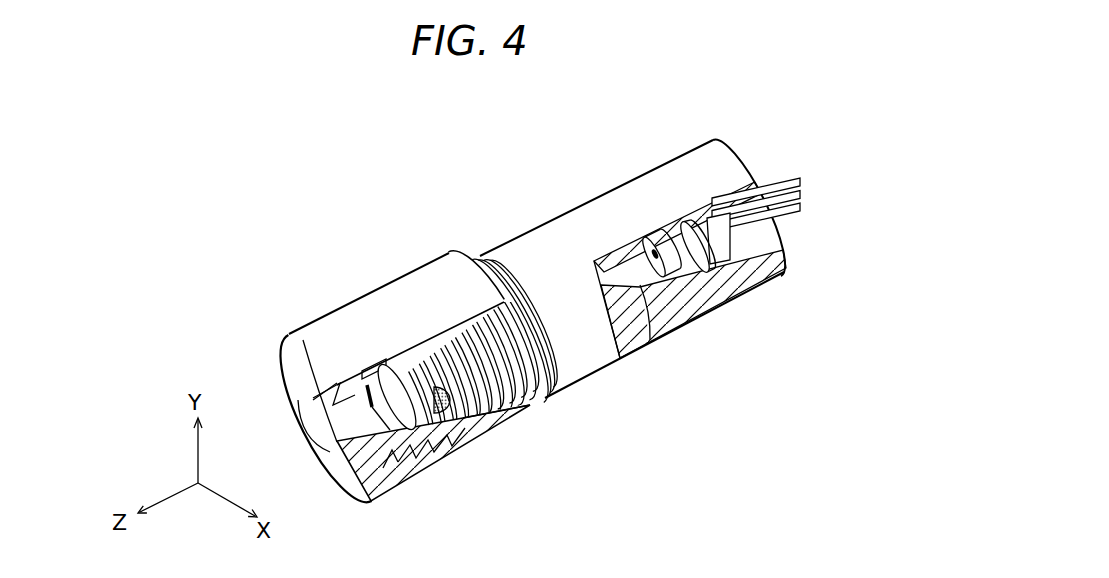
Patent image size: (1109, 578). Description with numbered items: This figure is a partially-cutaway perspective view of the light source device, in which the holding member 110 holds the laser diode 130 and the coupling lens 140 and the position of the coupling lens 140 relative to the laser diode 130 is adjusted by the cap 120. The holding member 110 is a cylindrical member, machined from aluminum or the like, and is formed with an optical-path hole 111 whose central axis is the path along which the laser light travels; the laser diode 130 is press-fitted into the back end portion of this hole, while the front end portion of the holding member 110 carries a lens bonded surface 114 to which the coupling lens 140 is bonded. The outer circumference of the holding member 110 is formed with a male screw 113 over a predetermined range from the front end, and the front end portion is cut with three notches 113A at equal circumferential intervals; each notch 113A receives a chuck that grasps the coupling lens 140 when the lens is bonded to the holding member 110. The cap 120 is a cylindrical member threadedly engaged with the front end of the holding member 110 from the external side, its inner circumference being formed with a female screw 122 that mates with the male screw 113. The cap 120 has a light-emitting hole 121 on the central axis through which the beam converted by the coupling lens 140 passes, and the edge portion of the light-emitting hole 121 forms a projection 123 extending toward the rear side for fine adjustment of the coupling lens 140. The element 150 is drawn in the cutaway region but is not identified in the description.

The holding member 110 is at (597, 188).
The optical-path hole 111 is at (650, 340).
The male screw 113 is at (479, 251).
The notches 113A is at (452, 445).
The lens bonded surface 114 is at (510, 428).
The cap 120 is at (370, 288).
The light-emitting hole 121 is at (318, 418).
The female screw 122 is at (423, 452).
The projection 123 is at (393, 458).
The laser diode 130 is at (733, 247).
The coupling lens 140 is at (338, 442).
The seal member 150 is at (450, 440).